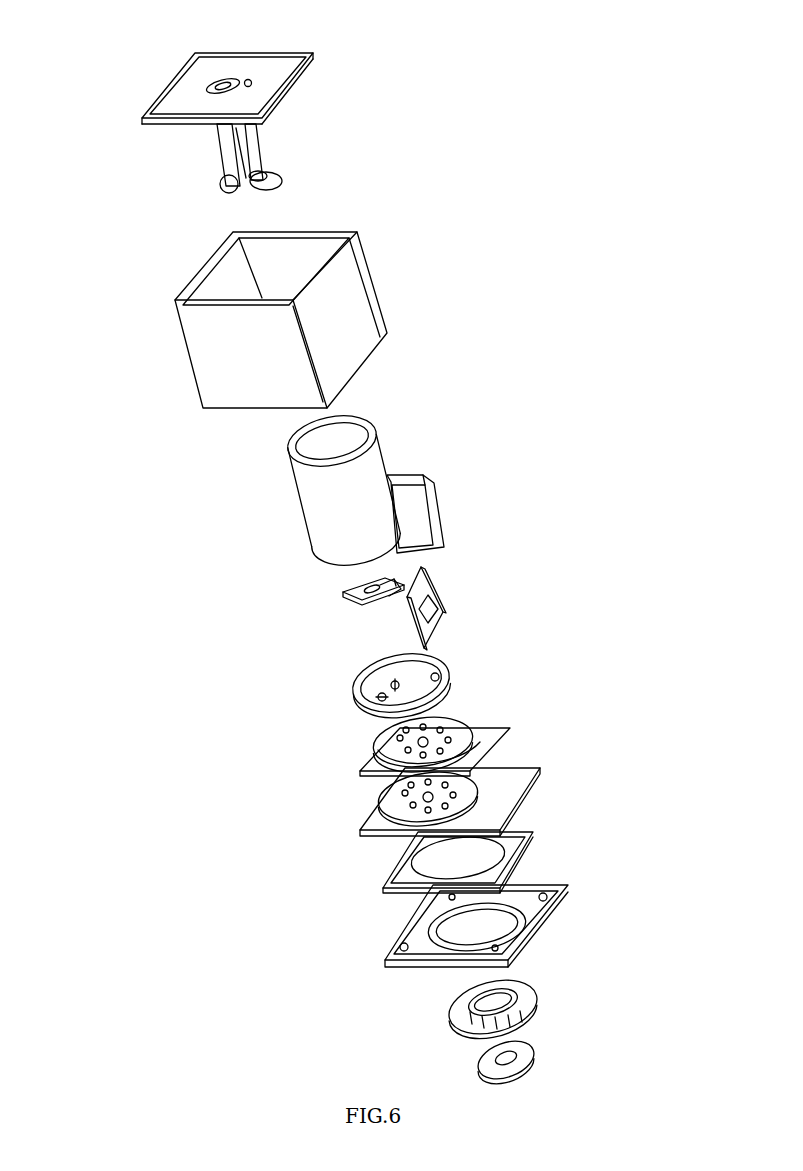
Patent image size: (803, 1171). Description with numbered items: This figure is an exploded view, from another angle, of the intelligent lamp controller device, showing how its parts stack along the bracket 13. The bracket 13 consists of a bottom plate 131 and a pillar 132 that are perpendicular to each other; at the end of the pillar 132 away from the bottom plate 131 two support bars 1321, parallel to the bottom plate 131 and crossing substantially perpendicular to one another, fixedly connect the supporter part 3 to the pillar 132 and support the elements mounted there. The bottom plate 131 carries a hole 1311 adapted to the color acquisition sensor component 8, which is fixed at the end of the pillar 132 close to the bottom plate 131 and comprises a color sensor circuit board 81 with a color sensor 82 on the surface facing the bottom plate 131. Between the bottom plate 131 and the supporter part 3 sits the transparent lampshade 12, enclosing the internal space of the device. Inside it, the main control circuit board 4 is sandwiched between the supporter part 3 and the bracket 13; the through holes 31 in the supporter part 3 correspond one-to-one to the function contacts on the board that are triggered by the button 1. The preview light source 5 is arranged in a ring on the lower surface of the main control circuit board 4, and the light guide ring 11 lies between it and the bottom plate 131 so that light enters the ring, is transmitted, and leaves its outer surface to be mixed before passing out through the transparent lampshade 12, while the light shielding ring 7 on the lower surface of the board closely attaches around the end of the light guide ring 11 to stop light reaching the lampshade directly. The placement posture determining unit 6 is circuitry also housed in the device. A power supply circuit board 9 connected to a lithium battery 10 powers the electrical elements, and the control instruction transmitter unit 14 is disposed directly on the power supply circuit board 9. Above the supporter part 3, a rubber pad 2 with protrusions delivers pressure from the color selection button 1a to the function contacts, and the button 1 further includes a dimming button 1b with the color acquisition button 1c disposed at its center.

The button 1 is at (538, 985).
The color selection button 1a is at (514, 926).
The dimming button 1b is at (544, 985).
The color acquisition button 1c is at (558, 1031).
The rubber pad 2 is at (506, 858).
The supporter part 3 is at (492, 790).
The through hole 31 is at (450, 795).
The main control circuit board 4 is at (475, 749).
The preview light source 5 is at (478, 731).
The placement posture determining unit 6 is at (469, 722).
The light shielding ring 7 is at (450, 682).
The color acquisition sensor component 8 is at (299, 600).
The color sensor circuit board 81 is at (321, 609).
The color sensor 82 is at (319, 578).
The power supply circuit board 9 is at (473, 599).
The control instruction transmitter unit 14 is at (479, 608).
The lithium battery 10 is at (453, 505).
The light guide ring 11 is at (391, 480).
The transparent lampshade 12 is at (320, 320).
The bracket 13 is at (253, 123).
The bottom plate 131 is at (267, 69).
The hole 1311 is at (222, 82).
The pillar 132 is at (305, 137).
The support bars 1321 is at (167, 201).